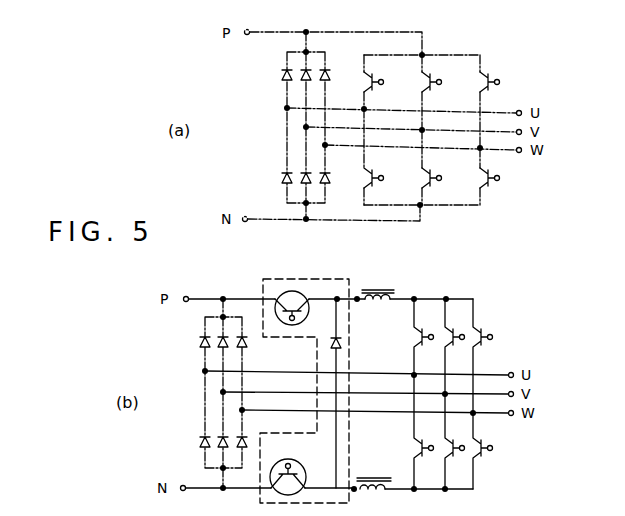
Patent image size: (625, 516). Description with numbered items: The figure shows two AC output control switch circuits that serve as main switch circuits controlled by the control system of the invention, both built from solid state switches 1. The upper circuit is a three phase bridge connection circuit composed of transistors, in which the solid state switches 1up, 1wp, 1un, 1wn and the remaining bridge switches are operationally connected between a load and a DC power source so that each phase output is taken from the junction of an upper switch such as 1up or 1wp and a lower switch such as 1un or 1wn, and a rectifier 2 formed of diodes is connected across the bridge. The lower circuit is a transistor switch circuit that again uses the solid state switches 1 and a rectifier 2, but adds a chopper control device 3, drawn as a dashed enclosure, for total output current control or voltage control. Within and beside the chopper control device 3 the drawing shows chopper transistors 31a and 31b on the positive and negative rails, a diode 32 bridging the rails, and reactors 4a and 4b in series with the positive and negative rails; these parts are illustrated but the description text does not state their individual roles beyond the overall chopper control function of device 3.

The solid state switches 1 is at (428, 260).
The solid state switch 1up is at (361, 85).
The solid state switch 1wp is at (480, 72).
The solid state switch 1un is at (358, 186).
The solid state switch 1wn is at (480, 190).
The rectifier 2 is at (284, 119).
The chopper control device 3 is at (313, 283).
The chopper transistor (positive side) 31a is at (310, 313).
The chopper transistor (negative side) 31b is at (297, 470).
The flywheel diode 32 is at (355, 393).
The reactor (positive side) 4a is at (379, 292).
The reactor (negative side) 4b is at (369, 478).